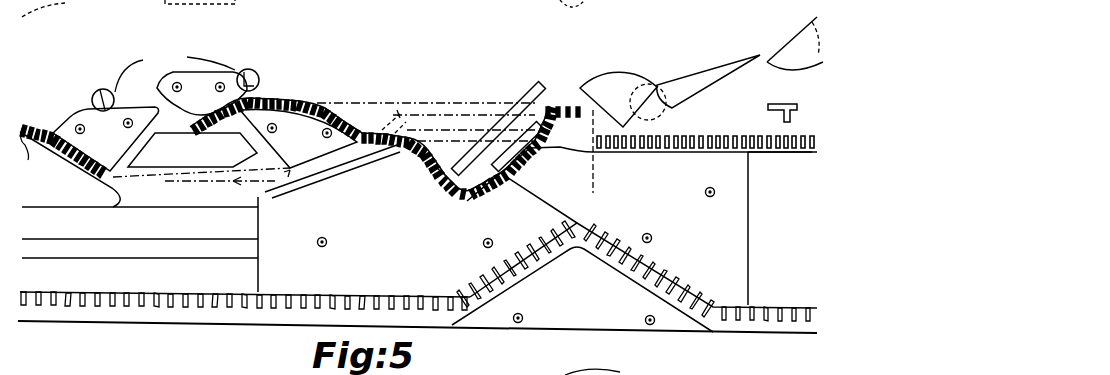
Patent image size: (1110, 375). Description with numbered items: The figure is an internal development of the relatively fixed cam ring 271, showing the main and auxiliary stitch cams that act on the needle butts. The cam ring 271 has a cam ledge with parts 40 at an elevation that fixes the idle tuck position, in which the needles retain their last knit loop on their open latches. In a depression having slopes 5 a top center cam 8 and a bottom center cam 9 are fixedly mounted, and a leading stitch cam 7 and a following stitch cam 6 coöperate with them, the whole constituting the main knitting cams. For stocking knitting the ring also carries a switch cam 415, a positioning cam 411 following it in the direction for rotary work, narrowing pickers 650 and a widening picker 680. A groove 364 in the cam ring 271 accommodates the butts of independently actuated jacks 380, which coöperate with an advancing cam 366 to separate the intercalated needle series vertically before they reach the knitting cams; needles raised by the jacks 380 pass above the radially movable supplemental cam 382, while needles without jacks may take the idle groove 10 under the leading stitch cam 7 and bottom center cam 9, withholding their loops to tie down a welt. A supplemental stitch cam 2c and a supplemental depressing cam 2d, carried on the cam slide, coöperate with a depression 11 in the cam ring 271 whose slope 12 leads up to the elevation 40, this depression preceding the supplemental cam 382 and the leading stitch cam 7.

The narrowing pickers 650 is at (175, 69).
The following stitch cam 6 is at (89, 142).
The top center cam 8 is at (202, 93).
The bottom center cam 9 is at (192, 150).
The leading stitch cam 7 is at (298, 138).
The cam ledge parts 40 is at (408, 148).
The slopes 5 is at (320, 186).
The idle groove 10 is at (290, 172).
The supplemental cam 382 is at (405, 92).
The supplemental stitch cam 2c is at (527, 93).
The supplemental depressing cam 2d is at (513, 163).
The depression 11 is at (483, 183).
The slope 12 is at (437, 168).
The jacks 380 is at (595, 192).
The positioning cam 411 is at (647, 82).
The switch cam 415 is at (737, 43).
The widening picker 680 is at (768, 107).
The cam ring 271 is at (782, 180).
The advancing cam 366 is at (634, 276).
The groove 364 is at (800, 322).